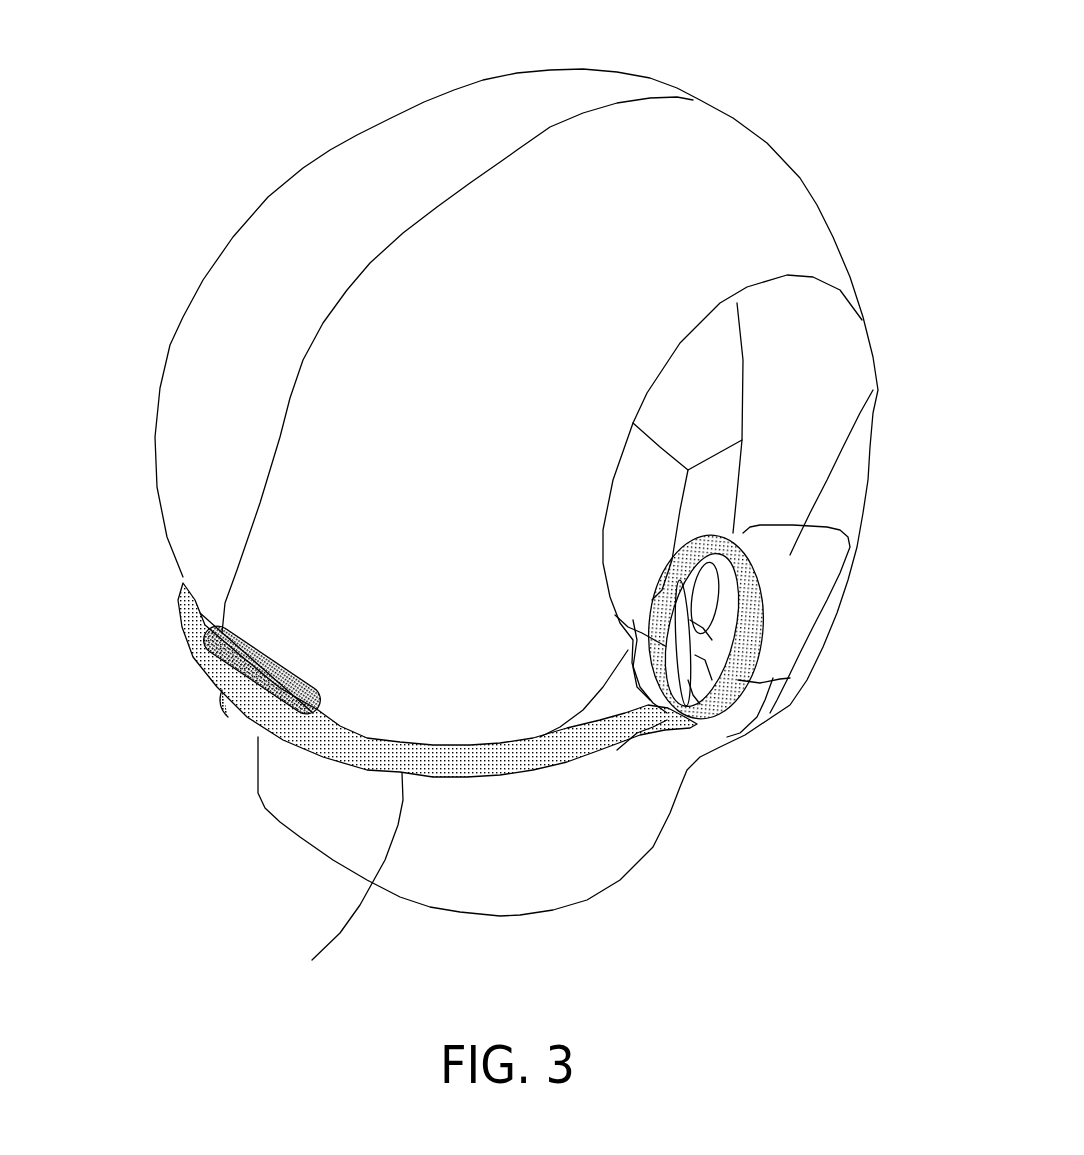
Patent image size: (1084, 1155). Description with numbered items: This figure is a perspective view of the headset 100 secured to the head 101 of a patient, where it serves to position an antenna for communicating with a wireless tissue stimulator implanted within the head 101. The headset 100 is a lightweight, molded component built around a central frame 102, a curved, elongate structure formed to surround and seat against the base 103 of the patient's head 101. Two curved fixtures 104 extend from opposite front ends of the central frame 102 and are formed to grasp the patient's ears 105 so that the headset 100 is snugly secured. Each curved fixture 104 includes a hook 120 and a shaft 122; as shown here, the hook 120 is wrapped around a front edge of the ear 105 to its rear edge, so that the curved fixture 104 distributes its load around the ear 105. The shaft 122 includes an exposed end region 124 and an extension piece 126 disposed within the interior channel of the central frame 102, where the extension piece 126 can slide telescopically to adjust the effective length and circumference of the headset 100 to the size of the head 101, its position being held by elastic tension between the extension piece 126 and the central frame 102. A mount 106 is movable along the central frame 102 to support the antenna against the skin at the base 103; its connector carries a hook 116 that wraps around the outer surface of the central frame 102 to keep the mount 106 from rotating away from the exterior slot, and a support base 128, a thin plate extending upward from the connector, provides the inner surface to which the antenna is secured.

The headset 100 is at (500, 717).
The head 101 is at (516, 467).
The central frame 102 is at (516, 835).
The base 103 is at (412, 729).
The curved fixture 104 is at (844, 599).
The ear 105 is at (687, 506).
The mount 106 is at (299, 646).
The hook 116 is at (154, 745).
The hook 120 is at (753, 451).
The shaft 122 is at (755, 766).
The exposed end region 124 is at (701, 630).
The extension piece 126 is at (622, 853).
The support base 128 is at (329, 540).